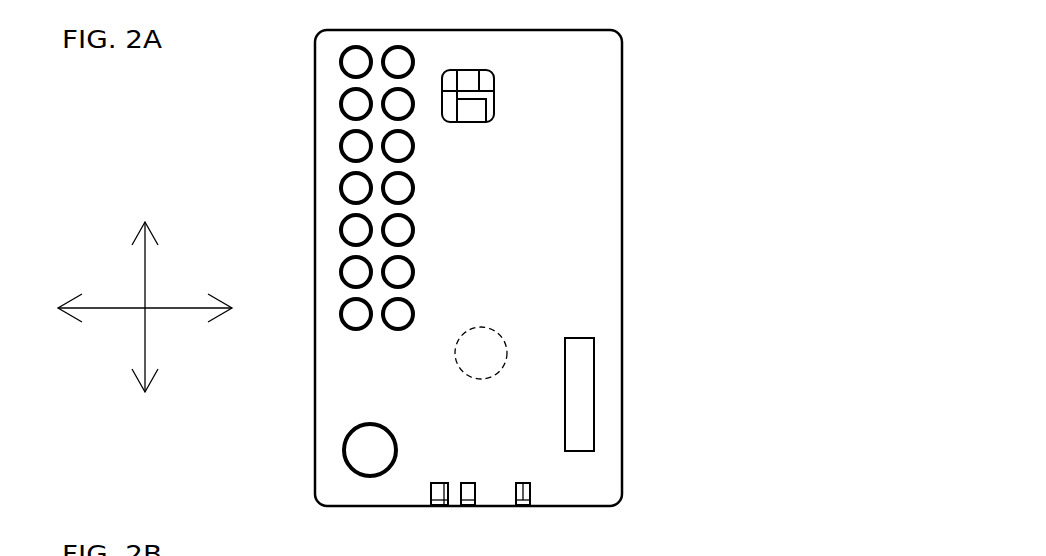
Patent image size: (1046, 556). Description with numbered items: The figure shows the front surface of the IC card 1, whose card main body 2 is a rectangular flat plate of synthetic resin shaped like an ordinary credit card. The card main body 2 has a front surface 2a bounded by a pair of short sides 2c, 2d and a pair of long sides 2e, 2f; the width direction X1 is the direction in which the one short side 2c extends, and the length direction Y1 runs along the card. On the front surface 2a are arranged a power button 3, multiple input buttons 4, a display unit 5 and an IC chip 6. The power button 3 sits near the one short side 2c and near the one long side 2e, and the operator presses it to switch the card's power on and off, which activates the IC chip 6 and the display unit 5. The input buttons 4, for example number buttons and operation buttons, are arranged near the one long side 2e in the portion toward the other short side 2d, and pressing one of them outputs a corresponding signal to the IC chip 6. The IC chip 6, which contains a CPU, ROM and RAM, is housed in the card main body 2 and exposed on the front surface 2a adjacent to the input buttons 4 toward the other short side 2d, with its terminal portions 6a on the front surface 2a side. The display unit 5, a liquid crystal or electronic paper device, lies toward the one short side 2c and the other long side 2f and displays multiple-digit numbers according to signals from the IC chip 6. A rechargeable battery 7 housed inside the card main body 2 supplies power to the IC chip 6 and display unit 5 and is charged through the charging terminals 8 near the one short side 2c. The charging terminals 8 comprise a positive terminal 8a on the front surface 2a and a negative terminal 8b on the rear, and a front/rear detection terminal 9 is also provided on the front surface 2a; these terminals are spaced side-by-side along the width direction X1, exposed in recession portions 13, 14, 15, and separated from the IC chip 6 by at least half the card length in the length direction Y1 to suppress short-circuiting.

The IC card 1 is at (493, 284).
The card main body 2 is at (493, 277).
The front surface 2a is at (612, 105).
The short side 2c is at (343, 507).
The short side 2d is at (385, 30).
The long side 2e is at (315, 126).
The long side 2f is at (622, 222).
The power button 3 is at (378, 454).
The input buttons 4 is at (353, 231).
The display unit 5 is at (594, 390).
The IC chip 6 is at (572, 128).
The terminal portions 6a is at (473, 113).
The rechargeable battery 7 is at (497, 336).
The charging terminals 8 is at (480, 514).
The positive terminal 8a is at (528, 506).
The negative terminal 8b is at (440, 505).
The front/rear detection terminal 9 is at (468, 506).
The recession portion 13 is at (520, 506).
The recession portion 14 is at (444, 506).
The recession portion 15 is at (465, 506).
The width direction X1 is at (183, 308).
The length direction Y1 is at (143, 268).